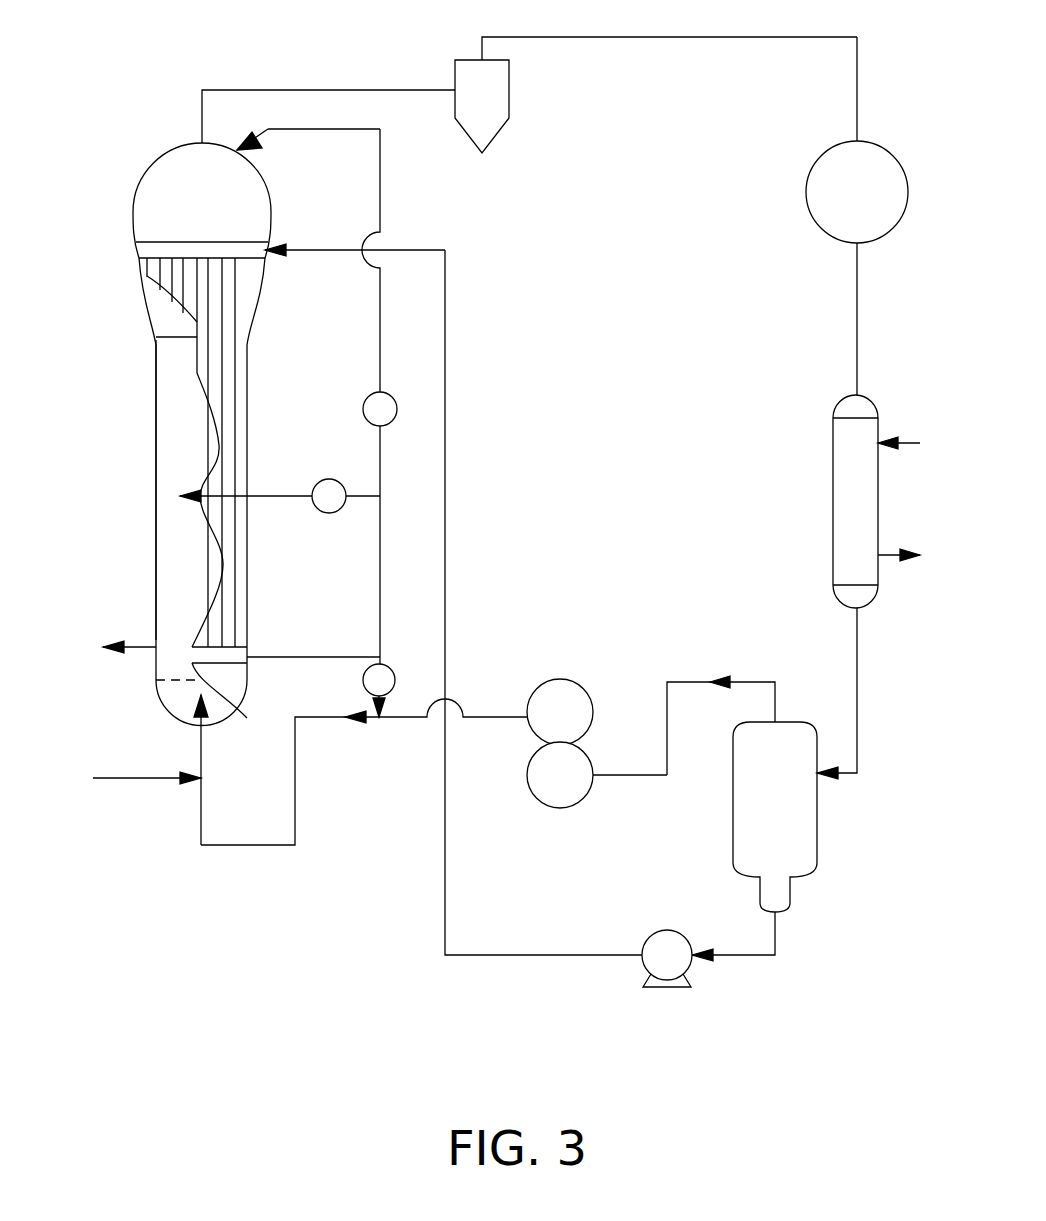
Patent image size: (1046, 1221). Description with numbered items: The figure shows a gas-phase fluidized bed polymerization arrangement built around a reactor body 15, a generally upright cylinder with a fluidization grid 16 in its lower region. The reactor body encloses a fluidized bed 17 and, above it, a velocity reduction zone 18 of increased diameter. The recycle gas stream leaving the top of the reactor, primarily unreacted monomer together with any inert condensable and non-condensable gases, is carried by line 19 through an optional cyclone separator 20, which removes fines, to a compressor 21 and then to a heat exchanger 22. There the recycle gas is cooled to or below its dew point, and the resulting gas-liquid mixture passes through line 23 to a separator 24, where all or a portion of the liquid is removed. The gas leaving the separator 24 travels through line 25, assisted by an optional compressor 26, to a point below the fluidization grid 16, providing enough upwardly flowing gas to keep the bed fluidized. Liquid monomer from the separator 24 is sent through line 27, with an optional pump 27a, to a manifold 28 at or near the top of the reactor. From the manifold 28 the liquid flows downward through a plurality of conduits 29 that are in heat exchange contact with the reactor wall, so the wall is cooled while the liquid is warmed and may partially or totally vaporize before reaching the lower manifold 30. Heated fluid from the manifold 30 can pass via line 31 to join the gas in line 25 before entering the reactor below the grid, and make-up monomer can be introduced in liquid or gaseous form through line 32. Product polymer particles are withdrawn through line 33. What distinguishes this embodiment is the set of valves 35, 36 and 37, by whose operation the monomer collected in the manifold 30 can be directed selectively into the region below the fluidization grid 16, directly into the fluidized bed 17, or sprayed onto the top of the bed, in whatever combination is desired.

The reactor body 15 is at (155, 358).
The fluidization grid 16 is at (168, 697).
The fluidized bed 17 is at (164, 445).
The velocity reduction zone 18 is at (143, 213).
The line 19 is at (333, 90).
The cyclone separator 20 is at (490, 130).
The compressor 21 is at (818, 188).
The heat exchanger 22 is at (840, 488).
The line 23 is at (858, 684).
The separator 24 is at (812, 835).
The line 25 is at (633, 776).
The compressor 26 is at (568, 800).
The line 27 is at (446, 492).
The pump 27a is at (682, 966).
The manifold 28 is at (236, 242).
The conduits 29 is at (240, 438).
The manifold 30 is at (245, 657).
The line 31 is at (296, 790).
The line 32 is at (145, 778).
The line 33 is at (140, 647).
The valve 35 is at (363, 401).
The valve 36 is at (326, 513).
The valve 37 is at (362, 680).